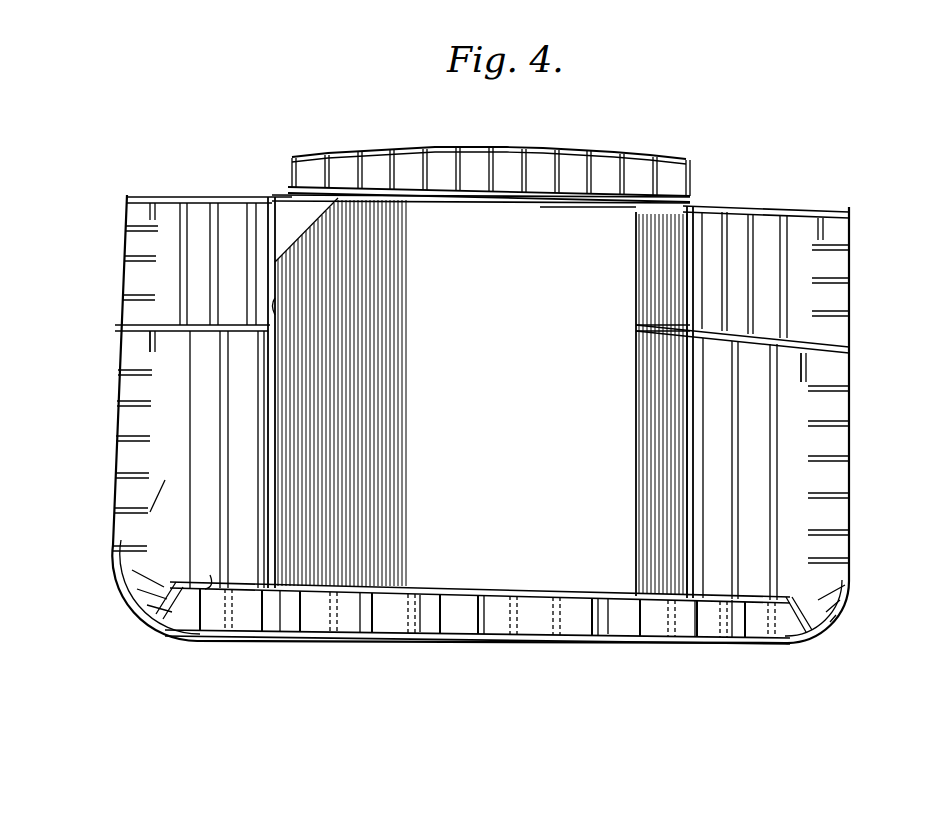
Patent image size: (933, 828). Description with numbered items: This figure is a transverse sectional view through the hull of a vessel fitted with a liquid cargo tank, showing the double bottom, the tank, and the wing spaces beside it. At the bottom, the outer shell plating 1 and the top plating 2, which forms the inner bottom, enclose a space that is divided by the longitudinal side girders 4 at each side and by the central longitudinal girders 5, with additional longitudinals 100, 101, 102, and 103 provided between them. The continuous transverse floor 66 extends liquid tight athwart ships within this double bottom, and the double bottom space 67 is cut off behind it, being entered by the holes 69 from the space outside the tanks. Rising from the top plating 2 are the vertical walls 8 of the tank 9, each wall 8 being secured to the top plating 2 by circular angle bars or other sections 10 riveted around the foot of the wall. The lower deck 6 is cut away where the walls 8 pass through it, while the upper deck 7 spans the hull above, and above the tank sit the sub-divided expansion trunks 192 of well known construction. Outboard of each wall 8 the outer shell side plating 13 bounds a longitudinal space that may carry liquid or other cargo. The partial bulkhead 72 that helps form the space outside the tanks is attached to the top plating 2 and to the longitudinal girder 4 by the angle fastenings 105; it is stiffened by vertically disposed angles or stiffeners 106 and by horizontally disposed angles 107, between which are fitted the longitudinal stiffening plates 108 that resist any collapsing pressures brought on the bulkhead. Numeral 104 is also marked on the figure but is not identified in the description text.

The outer shell plating 1 is at (586, 645).
The top plating 2 is at (563, 596).
The longitudinal side girder 4 is at (182, 628).
The central longitudinal girder 5 is at (480, 622).
The lower deck 6 is at (158, 325).
The upper deck 7 is at (205, 197).
The vertical wall of tank 8 is at (270, 229).
The tank 9 is at (586, 222).
The circular angle bar 10 is at (244, 624).
The outer shell side plating 13 is at (125, 243).
The transverse floor 66 is at (420, 602).
The double bottom space 67 is at (530, 632).
The holes 69 is at (734, 598).
The partial bulkhead 72 is at (160, 384).
The additional longitudinal 100 is at (695, 630).
The additional longitudinal 101 is at (598, 632).
The additional longitudinal 102 is at (360, 622).
The additional longitudinal 103 is at (280, 622).
The horizontal stiffener 104 is at (668, 325).
The angle fastening 105 is at (212, 577).
The vertical stiffener 106 is at (228, 412).
The horizontal angle 107 is at (150, 512).
The longitudinal stiffening plate 108 is at (136, 405).
The expansion trunk 192 is at (372, 166).